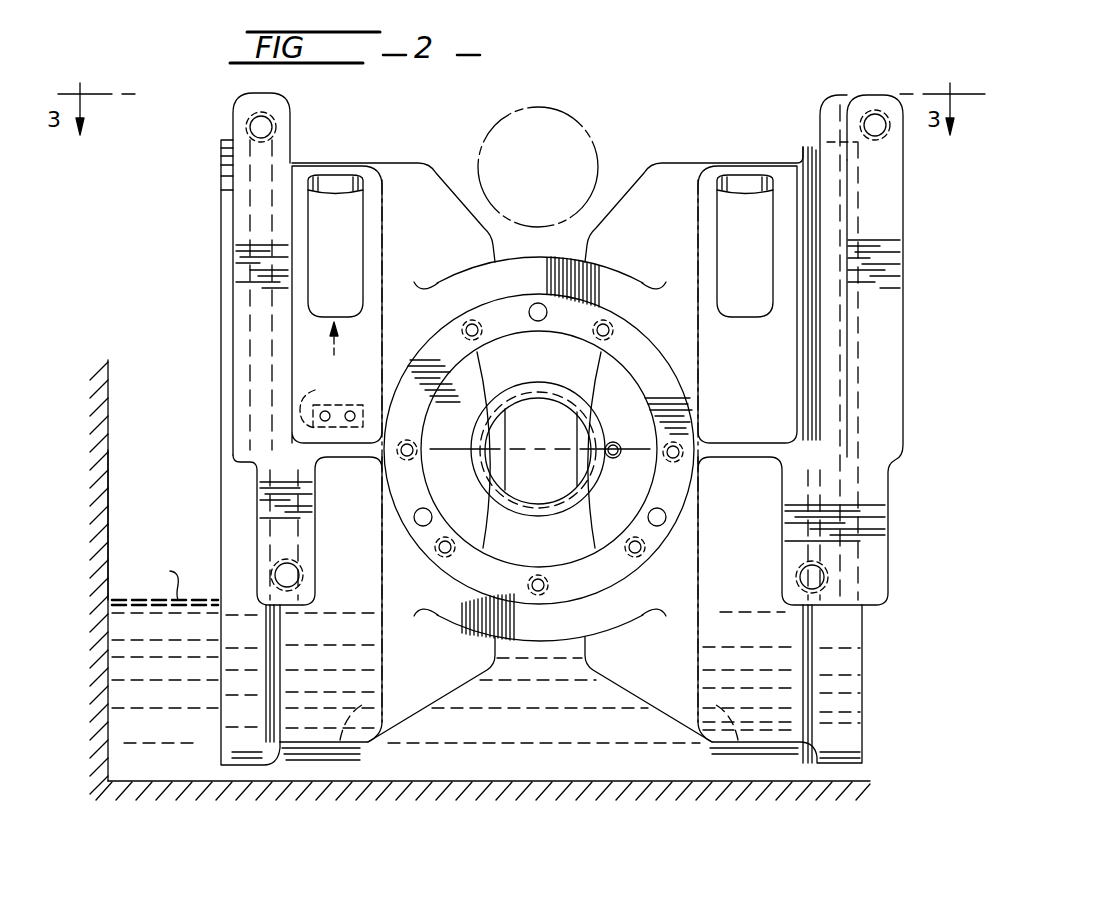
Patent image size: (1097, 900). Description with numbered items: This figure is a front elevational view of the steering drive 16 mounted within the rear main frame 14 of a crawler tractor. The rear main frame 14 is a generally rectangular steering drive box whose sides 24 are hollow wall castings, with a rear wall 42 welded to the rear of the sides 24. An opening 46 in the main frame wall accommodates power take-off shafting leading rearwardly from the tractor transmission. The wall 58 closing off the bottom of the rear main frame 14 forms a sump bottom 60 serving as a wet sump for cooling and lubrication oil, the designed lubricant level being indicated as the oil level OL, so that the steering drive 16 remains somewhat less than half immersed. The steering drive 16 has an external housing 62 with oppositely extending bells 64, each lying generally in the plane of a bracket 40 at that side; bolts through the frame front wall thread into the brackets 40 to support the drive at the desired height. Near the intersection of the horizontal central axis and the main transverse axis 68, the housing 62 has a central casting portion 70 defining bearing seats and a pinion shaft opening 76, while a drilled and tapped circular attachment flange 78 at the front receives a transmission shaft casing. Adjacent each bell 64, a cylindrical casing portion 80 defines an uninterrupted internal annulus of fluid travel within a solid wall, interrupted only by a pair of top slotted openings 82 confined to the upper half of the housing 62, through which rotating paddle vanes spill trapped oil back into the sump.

The rear main frame 14 is at (104, 378).
The steering drive 16 is at (196, 612).
The side 24 is at (109, 525).
The bracket 40 is at (283, 125).
The rear wall 42 is at (652, 762).
The opening 46 is at (479, 140).
The wall 58 is at (380, 787).
The sump bottom 60 is at (546, 780).
The external housing 62 is at (335, 162).
The bell 64 is at (222, 140).
The main transverse axis 68 is at (448, 440).
The central casting portion 70 is at (480, 470).
The pinion shaft opening 76 is at (490, 433).
The attachment flange 78 is at (530, 536).
The cylindrical casing portion 80 is at (365, 705).
The slotted opening 82 is at (308, 236).